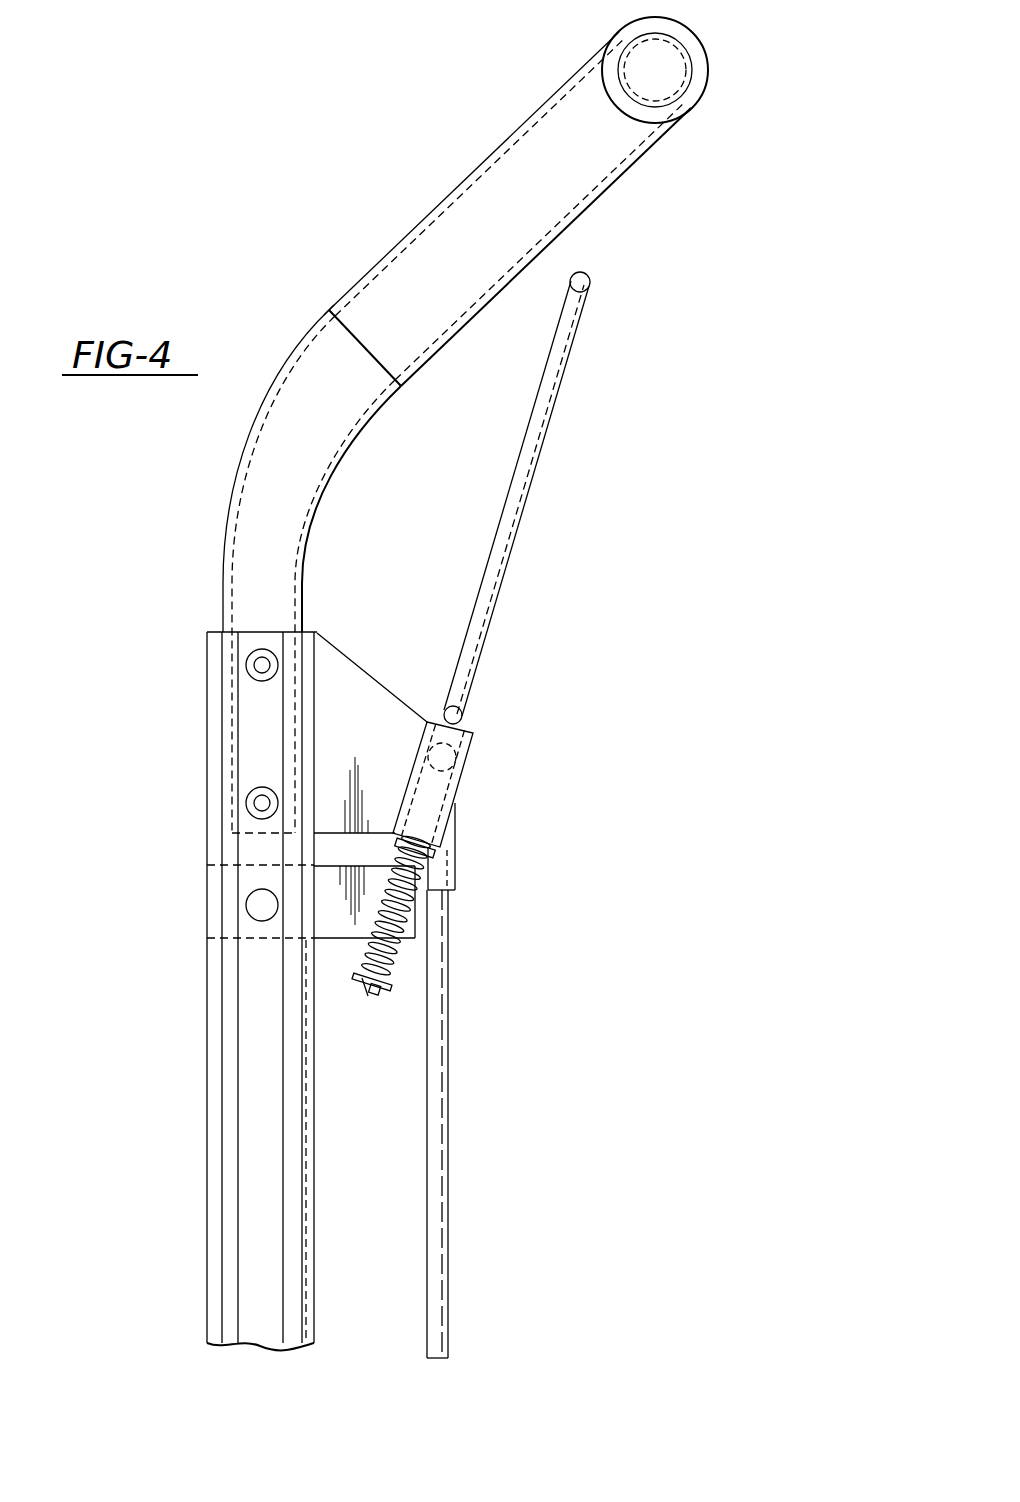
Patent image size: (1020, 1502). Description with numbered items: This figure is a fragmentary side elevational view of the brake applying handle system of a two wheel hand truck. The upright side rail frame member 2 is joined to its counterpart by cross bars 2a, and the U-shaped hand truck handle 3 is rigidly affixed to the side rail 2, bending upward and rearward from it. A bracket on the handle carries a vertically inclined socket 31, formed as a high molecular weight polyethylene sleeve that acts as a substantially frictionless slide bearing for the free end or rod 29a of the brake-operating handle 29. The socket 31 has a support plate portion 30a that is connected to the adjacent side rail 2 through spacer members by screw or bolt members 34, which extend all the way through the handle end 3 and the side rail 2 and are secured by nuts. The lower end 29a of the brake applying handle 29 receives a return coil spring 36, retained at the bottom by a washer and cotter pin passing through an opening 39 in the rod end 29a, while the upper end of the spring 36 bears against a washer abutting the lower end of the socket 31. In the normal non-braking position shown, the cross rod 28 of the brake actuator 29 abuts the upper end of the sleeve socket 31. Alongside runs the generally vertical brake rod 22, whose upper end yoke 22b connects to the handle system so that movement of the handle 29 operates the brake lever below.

The upright side rail frame member 2 is at (207, 1218).
The cross bar 2a is at (320, 922).
The U-shaped hand truck handle 3 is at (222, 575).
The brake rod 22 is at (443, 1165).
The upper end yoke 22b is at (455, 835).
The cross rod 28 is at (470, 714).
The brake-operating handle 29 is at (515, 540).
The rod end of brake handle 29a is at (363, 977).
The support plate portion 30a is at (383, 697).
The socket 31 is at (478, 762).
The bolt member 34 is at (245, 663).
The return coil spring 36 is at (390, 973).
The opening 39 is at (372, 990).